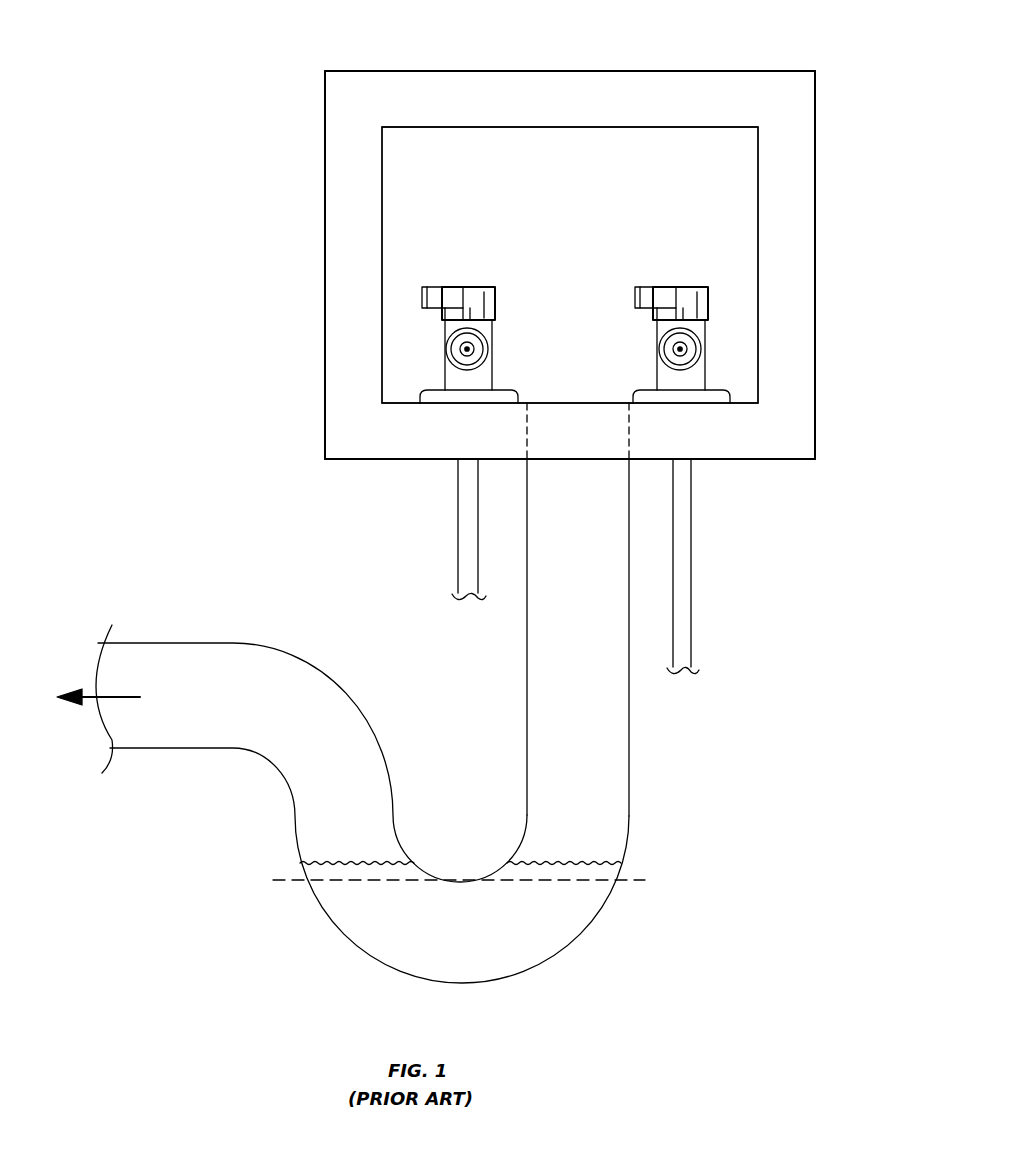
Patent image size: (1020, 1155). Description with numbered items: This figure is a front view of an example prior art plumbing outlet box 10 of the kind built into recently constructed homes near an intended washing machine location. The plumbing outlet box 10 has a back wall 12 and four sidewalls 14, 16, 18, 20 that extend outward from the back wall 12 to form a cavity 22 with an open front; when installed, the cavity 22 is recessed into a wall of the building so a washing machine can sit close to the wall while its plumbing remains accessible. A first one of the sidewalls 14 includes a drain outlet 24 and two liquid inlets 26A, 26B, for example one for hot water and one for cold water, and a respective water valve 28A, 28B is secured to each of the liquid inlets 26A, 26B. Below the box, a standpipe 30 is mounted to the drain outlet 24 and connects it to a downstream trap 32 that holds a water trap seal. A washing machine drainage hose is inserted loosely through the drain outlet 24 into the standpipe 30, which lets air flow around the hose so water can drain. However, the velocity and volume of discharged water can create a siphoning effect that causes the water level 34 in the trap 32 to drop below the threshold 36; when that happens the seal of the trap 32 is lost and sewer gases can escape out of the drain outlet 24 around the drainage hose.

The plumbing outlet box 10 is at (370, 64).
The back wall 12 is at (430, 167).
The first sidewall 14 is at (405, 405).
The sidewall 16 is at (610, 127).
The sidewall 18 is at (382, 253).
The sidewall 20 is at (758, 228).
The cavity 22 is at (587, 226).
The drain outlet 24 is at (573, 402).
The liquid inlet 26A is at (436, 394).
The liquid inlet 26B is at (705, 394).
The water valve 28A is at (470, 302).
The water valve 28B is at (680, 302).
The standpipe 30 is at (526, 688).
The trap 32 is at (606, 962).
The water level 34 is at (572, 862).
The threshold 36 is at (627, 880).